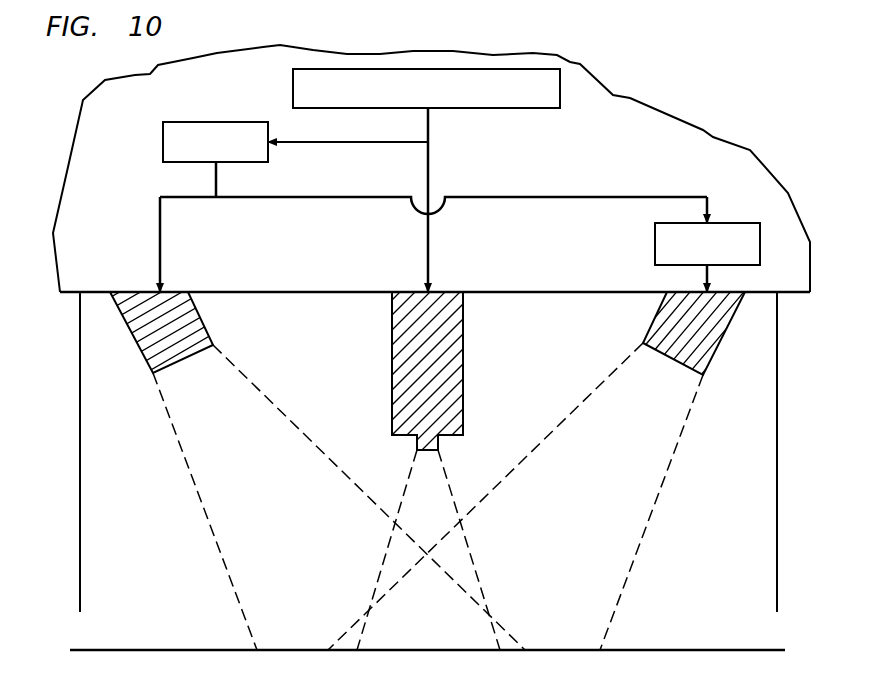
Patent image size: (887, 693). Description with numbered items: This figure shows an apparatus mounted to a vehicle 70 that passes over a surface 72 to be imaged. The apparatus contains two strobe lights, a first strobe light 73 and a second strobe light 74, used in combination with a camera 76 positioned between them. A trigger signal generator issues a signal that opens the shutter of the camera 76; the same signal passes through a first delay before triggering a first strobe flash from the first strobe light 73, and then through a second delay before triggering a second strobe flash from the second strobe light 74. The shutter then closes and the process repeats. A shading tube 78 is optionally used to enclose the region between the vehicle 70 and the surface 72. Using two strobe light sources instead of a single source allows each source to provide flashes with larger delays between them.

The vehicle 70 is at (665, 110).
The surface 72 is at (127, 650).
The first strobe light 73 is at (208, 335).
The second strobe light 74 is at (713, 352).
The camera 76 is at (463, 363).
The shading tube 78 is at (777, 445).